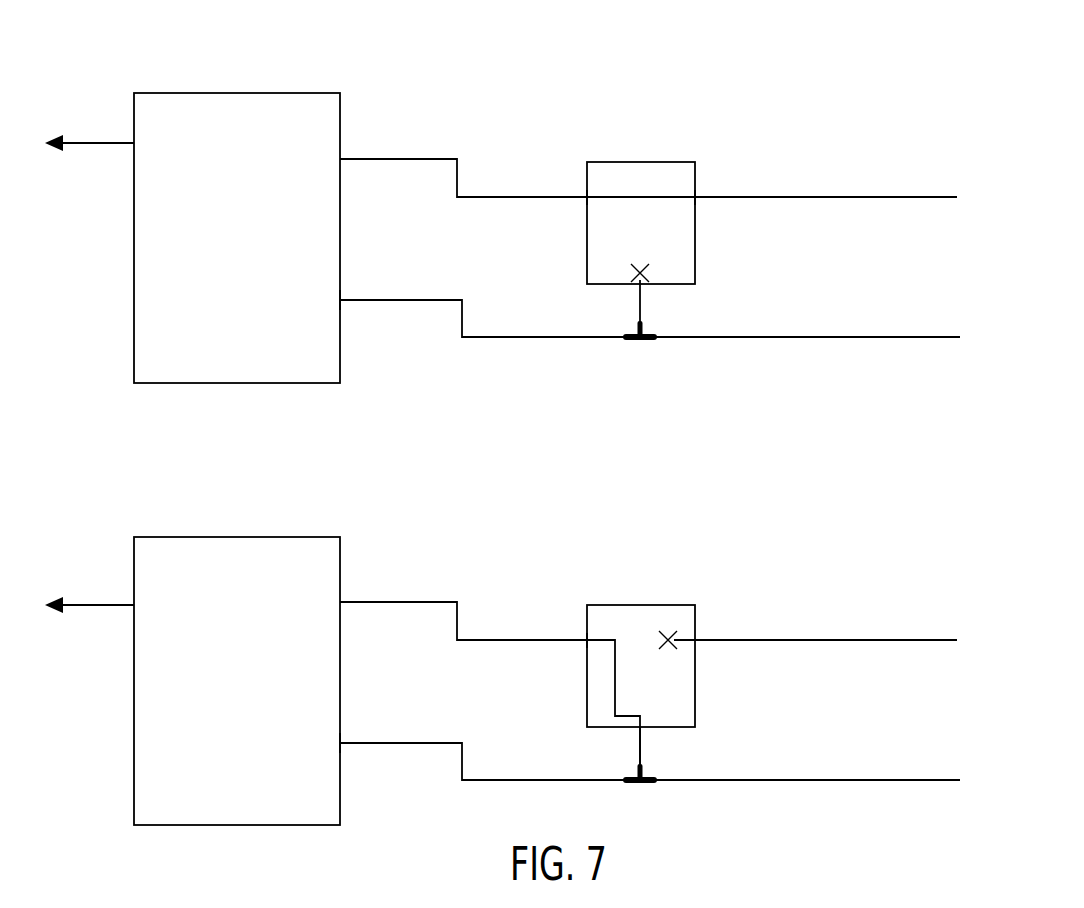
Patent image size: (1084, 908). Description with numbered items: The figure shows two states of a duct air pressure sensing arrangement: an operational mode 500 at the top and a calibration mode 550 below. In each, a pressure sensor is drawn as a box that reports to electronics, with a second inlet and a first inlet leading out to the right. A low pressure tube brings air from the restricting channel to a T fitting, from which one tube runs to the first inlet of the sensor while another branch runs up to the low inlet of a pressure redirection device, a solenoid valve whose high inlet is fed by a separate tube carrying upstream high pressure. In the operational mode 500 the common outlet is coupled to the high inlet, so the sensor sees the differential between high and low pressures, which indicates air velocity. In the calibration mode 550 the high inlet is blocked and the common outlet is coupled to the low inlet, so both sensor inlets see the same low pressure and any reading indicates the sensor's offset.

The operational mode 500 is at (148, 60).
The calibration mode 550 is at (501, 649).